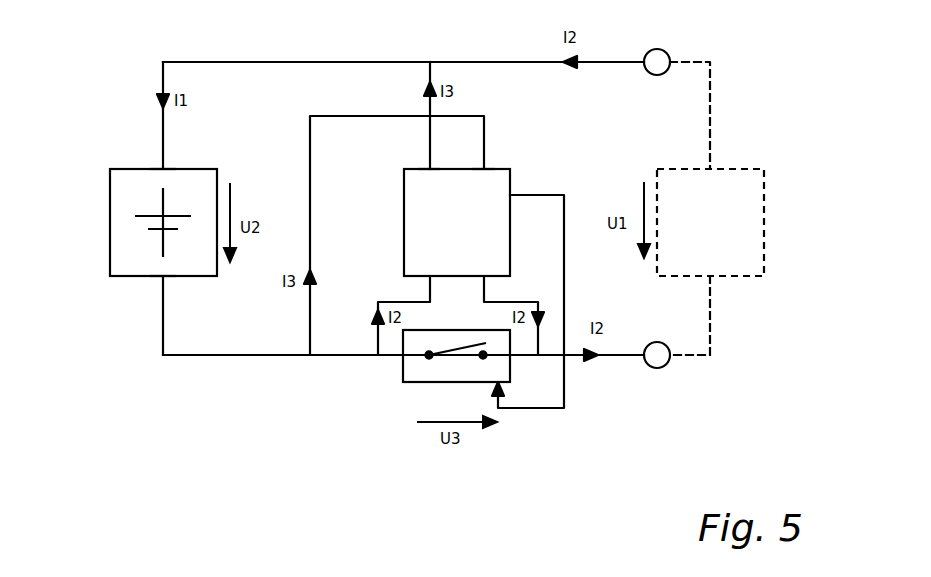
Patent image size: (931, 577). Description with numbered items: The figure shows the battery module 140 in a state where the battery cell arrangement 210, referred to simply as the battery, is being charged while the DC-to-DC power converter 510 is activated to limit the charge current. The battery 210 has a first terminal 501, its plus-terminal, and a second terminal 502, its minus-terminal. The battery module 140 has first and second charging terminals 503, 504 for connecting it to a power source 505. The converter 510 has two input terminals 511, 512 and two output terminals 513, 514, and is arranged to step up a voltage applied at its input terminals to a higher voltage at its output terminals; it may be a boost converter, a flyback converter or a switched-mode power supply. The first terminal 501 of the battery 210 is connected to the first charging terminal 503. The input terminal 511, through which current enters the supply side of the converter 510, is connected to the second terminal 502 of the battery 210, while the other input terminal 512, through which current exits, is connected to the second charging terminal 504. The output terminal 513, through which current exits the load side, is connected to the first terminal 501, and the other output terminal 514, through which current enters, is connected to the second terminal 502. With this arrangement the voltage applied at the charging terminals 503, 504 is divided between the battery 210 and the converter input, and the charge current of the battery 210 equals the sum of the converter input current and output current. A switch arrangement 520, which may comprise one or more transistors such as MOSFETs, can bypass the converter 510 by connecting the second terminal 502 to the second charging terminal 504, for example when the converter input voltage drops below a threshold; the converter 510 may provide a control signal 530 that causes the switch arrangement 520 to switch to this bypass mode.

The battery module 140 is at (114, 462).
The battery cell arrangement 210 is at (110, 195).
The first terminal 501 is at (163, 169).
The second terminal 502 is at (163, 277).
The first charging terminal 503 is at (657, 49).
The second charging terminal 504 is at (657, 368).
The power source 505 is at (764, 248).
The DC-to-DC power converter 510 is at (404, 185).
The input terminal 511 is at (427, 277).
The input terminal 512 is at (483, 277).
The output terminal 513 is at (428, 169).
The output terminal 514 is at (483, 169).
The switch arrangement 520 is at (403, 365).
The control signal 530 is at (525, 409).